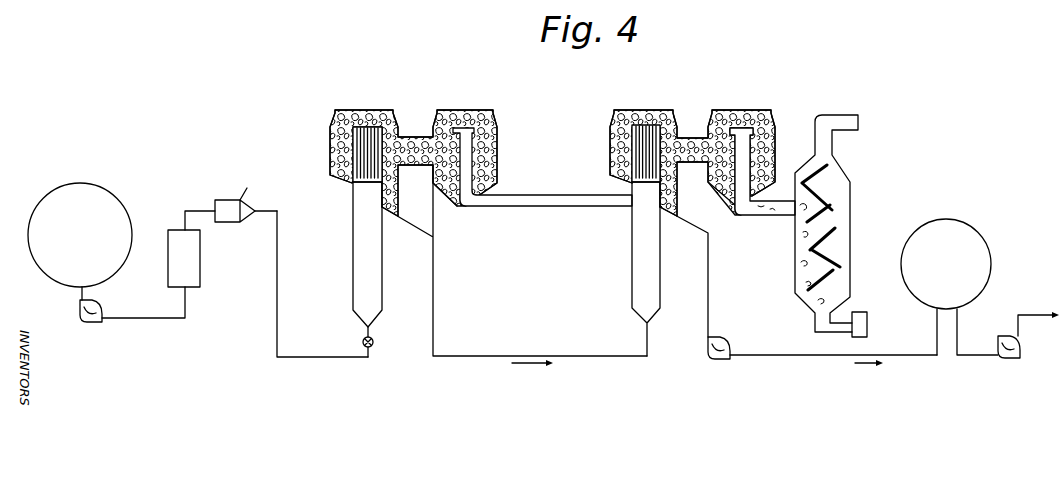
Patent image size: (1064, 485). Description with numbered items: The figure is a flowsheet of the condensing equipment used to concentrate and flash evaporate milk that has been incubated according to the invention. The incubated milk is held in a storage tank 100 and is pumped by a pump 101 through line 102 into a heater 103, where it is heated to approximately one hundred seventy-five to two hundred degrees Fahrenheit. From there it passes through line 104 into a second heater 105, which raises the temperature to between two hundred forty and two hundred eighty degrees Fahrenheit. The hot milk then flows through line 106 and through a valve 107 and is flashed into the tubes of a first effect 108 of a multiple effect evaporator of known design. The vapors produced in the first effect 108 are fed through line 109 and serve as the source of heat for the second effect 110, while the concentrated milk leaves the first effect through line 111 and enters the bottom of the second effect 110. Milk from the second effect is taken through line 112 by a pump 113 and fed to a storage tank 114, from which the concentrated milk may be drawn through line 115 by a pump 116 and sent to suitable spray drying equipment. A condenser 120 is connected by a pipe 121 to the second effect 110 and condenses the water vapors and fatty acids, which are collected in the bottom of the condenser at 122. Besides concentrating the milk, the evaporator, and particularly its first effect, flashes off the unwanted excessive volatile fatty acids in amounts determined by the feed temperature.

The storage tank 100 is at (92, 183).
The pump 101 is at (92, 320).
The line 102 is at (187, 307).
The heater 103 is at (200, 273).
The line 104 is at (193, 212).
The second heater 105 is at (240, 222).
The line 106 is at (317, 357).
The valve 107 is at (373, 345).
The first effect 108 is at (353, 223).
The line 109 is at (548, 195).
The second effect 110 is at (632, 265).
The line 111 is at (435, 272).
The line 112 is at (713, 282).
The pump 113 is at (715, 362).
The storage tank 114 is at (943, 225).
The line 115 is at (957, 325).
The pump 116 is at (1026, 351).
The condenser 120 is at (852, 197).
The pipe 121 is at (757, 218).
The bottom of condenser 122 is at (862, 311).